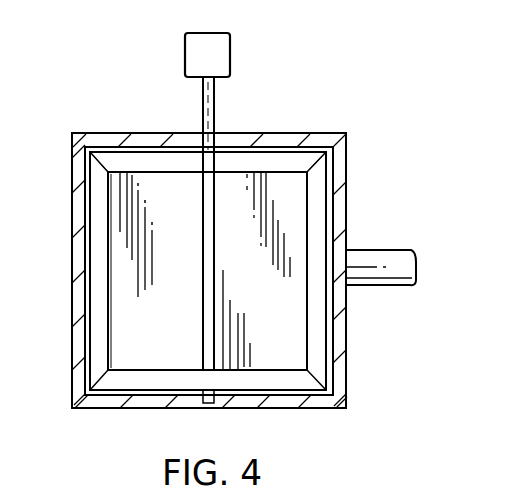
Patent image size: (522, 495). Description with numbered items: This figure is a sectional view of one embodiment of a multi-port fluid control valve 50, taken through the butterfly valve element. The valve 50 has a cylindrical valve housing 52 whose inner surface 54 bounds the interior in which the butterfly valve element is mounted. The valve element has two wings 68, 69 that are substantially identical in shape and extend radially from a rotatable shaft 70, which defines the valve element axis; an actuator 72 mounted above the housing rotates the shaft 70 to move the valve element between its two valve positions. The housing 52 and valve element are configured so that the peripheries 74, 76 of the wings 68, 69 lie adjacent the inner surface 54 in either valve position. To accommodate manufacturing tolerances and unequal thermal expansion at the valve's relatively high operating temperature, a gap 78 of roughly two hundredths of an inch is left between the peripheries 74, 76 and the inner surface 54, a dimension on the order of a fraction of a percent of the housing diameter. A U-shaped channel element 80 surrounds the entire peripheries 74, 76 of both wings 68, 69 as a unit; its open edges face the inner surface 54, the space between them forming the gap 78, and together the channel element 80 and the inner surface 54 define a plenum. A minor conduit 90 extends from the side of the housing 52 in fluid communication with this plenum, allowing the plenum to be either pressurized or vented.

The multi-port fluid control valve 50 is at (316, 81).
The valve housing 52 is at (340, 203).
The inner surface 54 is at (108, 150).
The wing 68 is at (163, 187).
The wing 69 is at (281, 190).
The rotatable shaft 70 is at (214, 113).
The actuator 72 is at (218, 57).
The periphery 74 is at (94, 280).
The periphery 76 is at (324, 333).
The gap 78 is at (82, 141).
The U-shaped channel element 80 is at (98, 243).
The minor conduit 90 is at (373, 276).